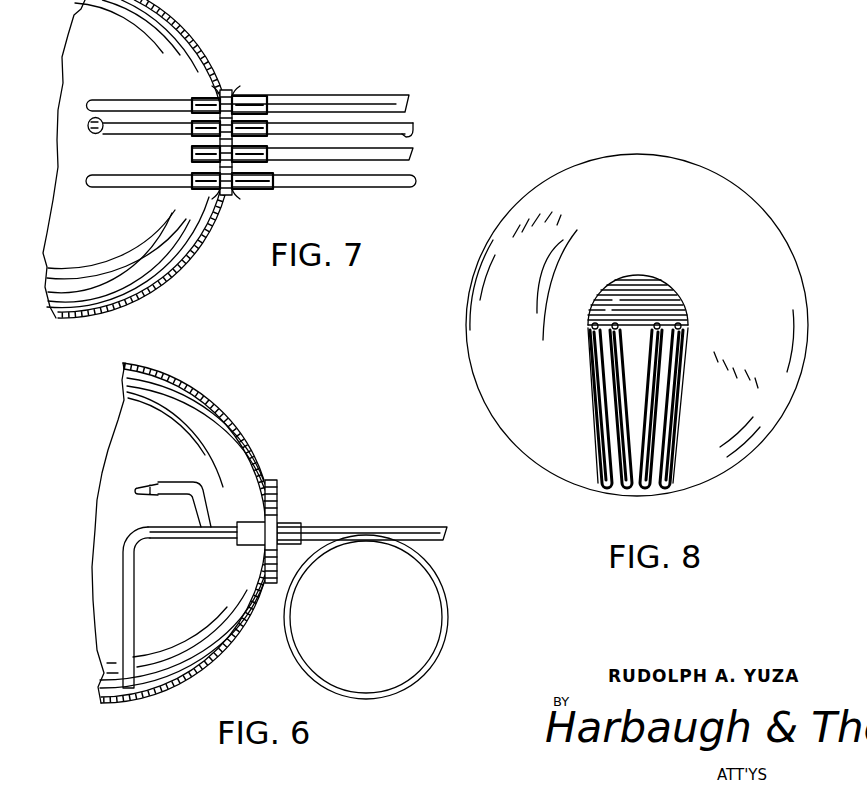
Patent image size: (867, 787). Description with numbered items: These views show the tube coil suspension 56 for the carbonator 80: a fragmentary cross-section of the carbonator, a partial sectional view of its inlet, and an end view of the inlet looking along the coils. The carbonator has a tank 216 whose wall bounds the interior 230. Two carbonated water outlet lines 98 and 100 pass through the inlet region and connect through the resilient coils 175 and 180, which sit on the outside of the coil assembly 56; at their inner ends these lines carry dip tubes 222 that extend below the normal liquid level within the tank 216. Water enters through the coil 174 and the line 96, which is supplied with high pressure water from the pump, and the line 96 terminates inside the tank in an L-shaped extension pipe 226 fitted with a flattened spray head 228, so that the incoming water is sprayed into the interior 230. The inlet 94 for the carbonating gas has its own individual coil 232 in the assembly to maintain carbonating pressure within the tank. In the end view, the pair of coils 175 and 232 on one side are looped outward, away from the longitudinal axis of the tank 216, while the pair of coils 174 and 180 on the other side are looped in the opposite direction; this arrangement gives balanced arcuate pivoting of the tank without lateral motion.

In FIG. 7, the tube coil suspension 56 is at (334, 82).
In FIG. 6, the tube coil suspension 56 is at (351, 617).
In FIG. 8, the tube coil suspension 56 is at (641, 400).
In FIG. 7, the carbonator 80 is at (120, 168).
In FIG. 6, the carbonator 80 is at (196, 533).
In FIG. 8, the carbonator 80 is at (618, 325).
In FIG. 7, the inlet for the carbonating gas 94 is at (270, 165).
In FIG. 7, the water line 96 is at (262, 104).
In FIG. 7, the carbonated water outlet line 98 is at (238, 196).
In FIG. 6, the carbonated water outlet line 98 is at (292, 527).
In FIG. 7, the carbonated water outlet line 100 is at (236, 96).
In FIG. 7, the coil 174 is at (408, 136).
In FIG. 8, the coil 174 is at (643, 487).
In FIG. 7, the resilient coil 175 is at (372, 196).
In FIG. 6, the resilient coil 175 is at (443, 618).
In FIG. 8, the resilient coil 175 is at (607, 405).
In FIG. 7, the resilient coil 180 is at (231, 85).
In FIG. 8, the resilient coil 180 is at (677, 407).
In FIG. 7, the tank 216 is at (157, 274).
In FIG. 6, the tank 216 is at (238, 430).
In FIG. 8, the tank 216 is at (469, 317).
In FIG. 6, the dip tubes 222 is at (123, 623).
In FIG. 7, the L-shaped extension pipe 226 is at (258, 141).
In FIG. 7, the flattened spray head 228 is at (97, 134).
In FIG. 7, the interior of the tank 230 is at (68, 206).
In FIG. 7, the coil 232 is at (325, 185).
In FIG. 8, the coil 232 is at (628, 482).